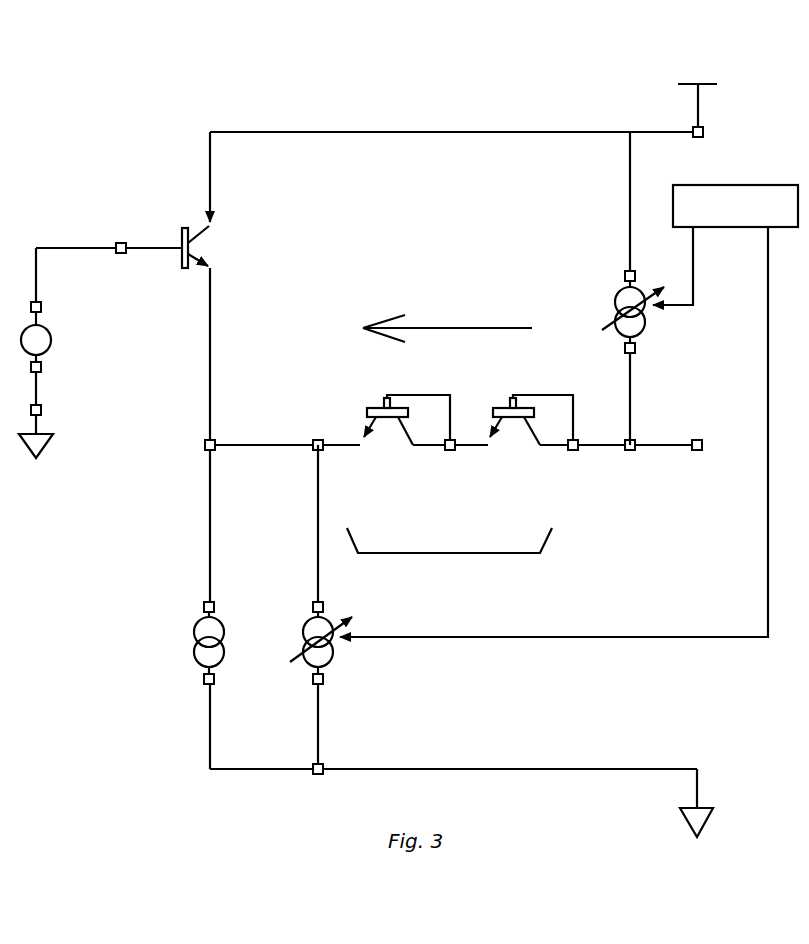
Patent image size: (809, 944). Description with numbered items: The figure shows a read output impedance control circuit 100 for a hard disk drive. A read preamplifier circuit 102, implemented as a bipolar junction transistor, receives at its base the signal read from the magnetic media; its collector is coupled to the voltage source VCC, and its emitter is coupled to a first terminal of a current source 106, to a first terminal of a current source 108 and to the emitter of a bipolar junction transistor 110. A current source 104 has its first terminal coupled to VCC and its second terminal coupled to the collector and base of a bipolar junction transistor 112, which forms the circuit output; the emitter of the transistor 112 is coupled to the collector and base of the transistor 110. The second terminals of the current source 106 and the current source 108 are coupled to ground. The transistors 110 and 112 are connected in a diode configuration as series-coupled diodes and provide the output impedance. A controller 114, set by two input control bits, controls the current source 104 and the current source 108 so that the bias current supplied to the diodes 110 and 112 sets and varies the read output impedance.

The amplifier circuit 100 is at (712, 147).
The read preamplifier circuit 102 is at (182, 228).
The current source 104 is at (650, 322).
The current source 106 is at (223, 642).
The current source 108 is at (335, 657).
The bipolar junction transistor 110 is at (430, 392).
The bipolar junction transistor 112 is at (557, 392).
The controller 114 is at (723, 228).